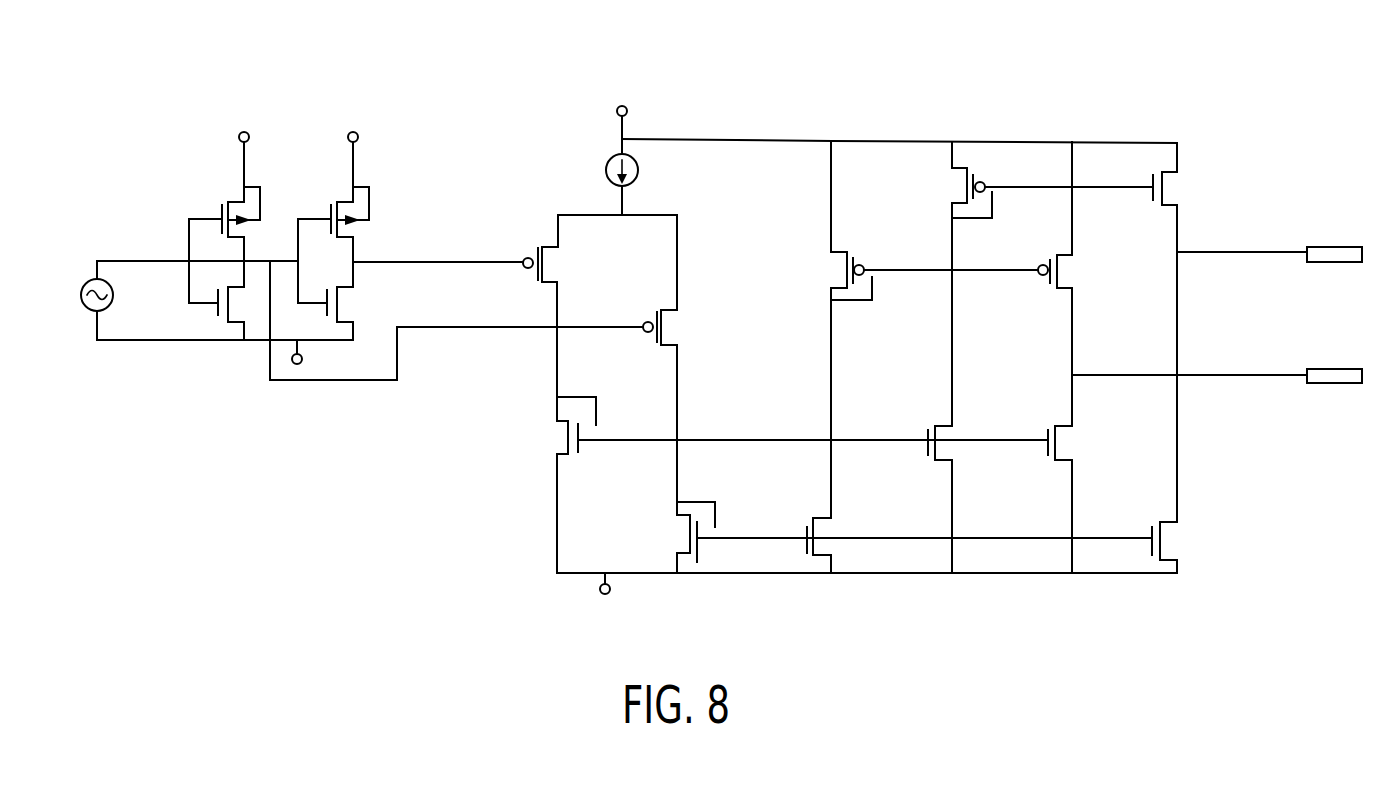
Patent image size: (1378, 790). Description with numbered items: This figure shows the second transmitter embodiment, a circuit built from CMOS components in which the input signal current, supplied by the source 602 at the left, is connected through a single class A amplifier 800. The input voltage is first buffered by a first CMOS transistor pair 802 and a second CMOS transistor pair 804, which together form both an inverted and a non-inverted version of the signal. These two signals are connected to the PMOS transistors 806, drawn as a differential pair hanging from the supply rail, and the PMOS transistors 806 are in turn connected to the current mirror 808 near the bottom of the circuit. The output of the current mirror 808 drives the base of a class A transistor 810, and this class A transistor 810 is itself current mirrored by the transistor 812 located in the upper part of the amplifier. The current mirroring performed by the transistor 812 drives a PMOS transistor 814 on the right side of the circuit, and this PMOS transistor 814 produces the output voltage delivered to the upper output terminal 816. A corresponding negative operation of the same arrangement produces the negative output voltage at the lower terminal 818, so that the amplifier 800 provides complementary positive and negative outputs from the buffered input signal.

The AC signal source 602 is at (80, 292).
The class A amplifier 800 is at (933, 124).
The first CMOS transistor pair 802 is at (267, 98).
The second CMOS transistor pair 804 is at (390, 147).
The PMOS transistors 806 is at (546, 229).
The current mirror 808 is at (533, 437).
The class A transistor 810 is at (970, 398).
The transistor 812 is at (1023, 160).
The PMOS transistor 814 is at (1202, 148).
The first output terminal 816 is at (1332, 247).
The negative output voltage 818 is at (1333, 385).